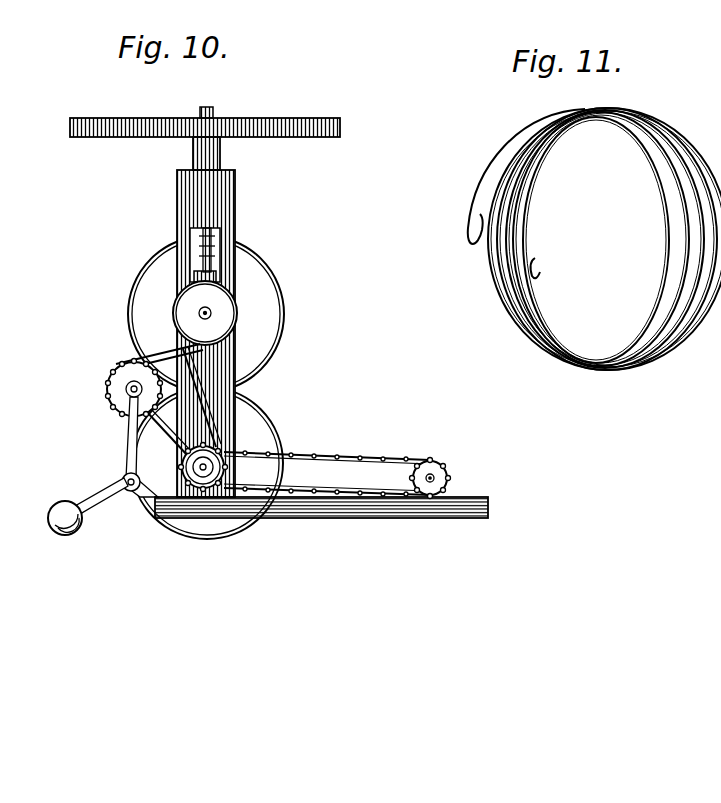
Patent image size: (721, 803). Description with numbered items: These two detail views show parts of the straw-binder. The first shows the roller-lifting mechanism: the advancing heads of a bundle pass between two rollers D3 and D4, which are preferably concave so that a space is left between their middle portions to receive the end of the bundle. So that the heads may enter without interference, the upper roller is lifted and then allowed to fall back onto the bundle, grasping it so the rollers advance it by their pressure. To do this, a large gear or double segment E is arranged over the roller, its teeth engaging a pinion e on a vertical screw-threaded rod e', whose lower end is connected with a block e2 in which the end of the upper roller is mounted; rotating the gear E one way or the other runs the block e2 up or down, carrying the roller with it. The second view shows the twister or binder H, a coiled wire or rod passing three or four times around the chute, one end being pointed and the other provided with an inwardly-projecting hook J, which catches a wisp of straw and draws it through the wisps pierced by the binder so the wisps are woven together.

In FIG. 10, the large gear or double segment E is at (247, 127).
In FIG. 10, the pinion e is at (199, 130).
In FIG. 10, the vertical screw-threaded rod e' is at (229, 247).
In FIG. 10, the block e2 is at (232, 288).
In FIG. 10, the roller D4 is at (265, 324).
In FIG. 10, the roller D3 is at (255, 430).
In FIG. 11, the twister or binder H is at (695, 248).
In FIG. 11, the inwardly-projecting hook J is at (470, 237).